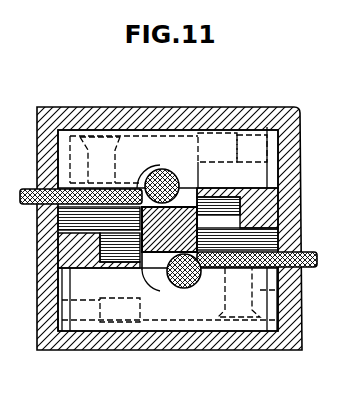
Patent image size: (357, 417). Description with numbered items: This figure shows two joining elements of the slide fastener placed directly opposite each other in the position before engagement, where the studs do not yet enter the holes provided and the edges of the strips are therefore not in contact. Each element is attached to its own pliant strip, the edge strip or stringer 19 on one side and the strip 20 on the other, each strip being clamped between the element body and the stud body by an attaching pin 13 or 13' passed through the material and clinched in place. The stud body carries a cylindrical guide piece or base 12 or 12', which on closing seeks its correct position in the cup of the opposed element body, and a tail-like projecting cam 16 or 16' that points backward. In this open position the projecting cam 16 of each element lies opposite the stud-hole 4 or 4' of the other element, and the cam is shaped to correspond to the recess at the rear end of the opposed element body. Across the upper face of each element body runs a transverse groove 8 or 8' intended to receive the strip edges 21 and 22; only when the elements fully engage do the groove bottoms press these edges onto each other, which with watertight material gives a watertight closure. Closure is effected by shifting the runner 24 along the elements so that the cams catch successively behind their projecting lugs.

The stud-hole 4 is at (120, 347).
The stud-hole 4' is at (217, 114).
The recess or groove 8 is at (156, 324).
The recess or groove 8' is at (162, 135).
The guide piece or base 12 is at (242, 127).
The guide piece or base 12' is at (63, 332).
The attaching pin 13 is at (237, 312).
The attaching pin 13' is at (99, 148).
The projecting cam 16 is at (223, 141).
The projecting cam 16' is at (112, 314).
The edge strip or stringer 19 is at (277, 300).
The strip 20 is at (73, 189).
The strip edge 21 is at (186, 297).
The strip edge 22 is at (150, 177).
The runner 24 is at (301, 345).